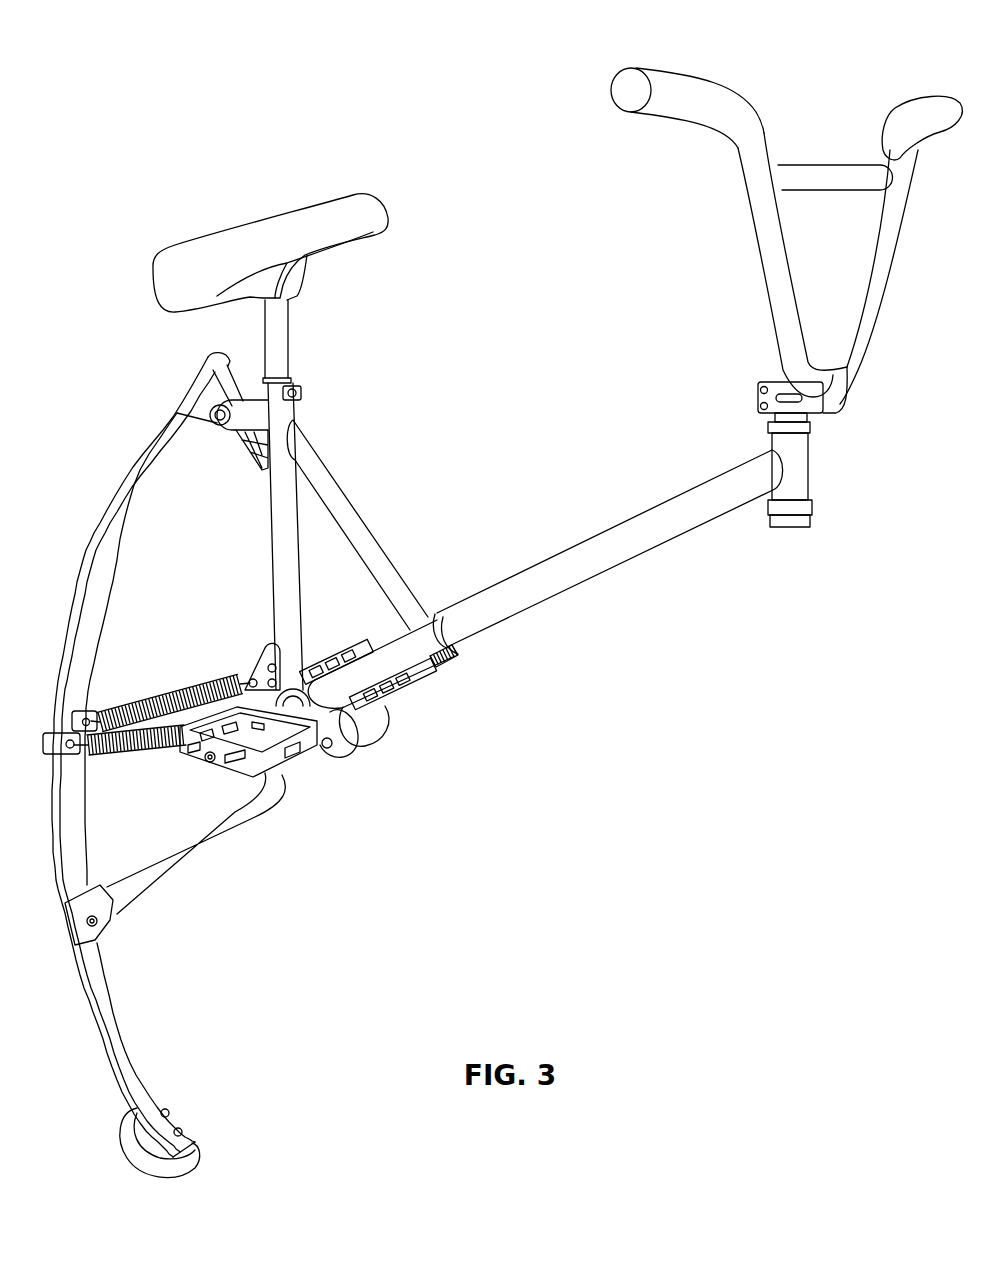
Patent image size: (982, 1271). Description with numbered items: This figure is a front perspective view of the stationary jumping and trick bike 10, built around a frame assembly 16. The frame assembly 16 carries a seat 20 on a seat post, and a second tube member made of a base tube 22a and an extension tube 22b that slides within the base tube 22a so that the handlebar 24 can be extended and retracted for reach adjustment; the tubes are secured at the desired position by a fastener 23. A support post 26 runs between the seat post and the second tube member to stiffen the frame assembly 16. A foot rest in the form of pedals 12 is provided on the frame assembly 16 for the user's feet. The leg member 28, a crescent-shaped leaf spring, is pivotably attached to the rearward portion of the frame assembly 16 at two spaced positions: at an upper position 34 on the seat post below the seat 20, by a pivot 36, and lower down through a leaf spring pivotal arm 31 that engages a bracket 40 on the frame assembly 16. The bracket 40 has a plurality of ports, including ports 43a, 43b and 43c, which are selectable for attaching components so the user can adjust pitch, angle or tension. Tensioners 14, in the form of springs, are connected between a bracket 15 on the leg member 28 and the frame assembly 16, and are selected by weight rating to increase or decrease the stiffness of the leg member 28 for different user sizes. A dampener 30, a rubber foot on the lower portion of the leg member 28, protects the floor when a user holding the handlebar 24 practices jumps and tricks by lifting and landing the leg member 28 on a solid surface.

The stationary jumping and trick bike 10 is at (407, 84).
The pedals 12 is at (377, 707).
The tensioners 14 is at (183, 707).
The bracket 15 is at (68, 757).
The frame assembly 16 is at (449, 601).
The seat 20 is at (293, 213).
The base tube 22a is at (387, 632).
The extension tube 22b is at (633, 560).
The fastener 23 is at (443, 665).
The handlebar 24 is at (852, 165).
The support post 26 is at (367, 527).
The leg member 28 is at (73, 575).
The dampener 30 is at (150, 1163).
The leaf spring pivotal arm 31 is at (200, 867).
The upper position 34 is at (253, 398).
The pivot 36 is at (217, 415).
The bracket 40 is at (307, 775).
The port 43a is at (250, 680).
The port 43b is at (270, 661).
The port 43c is at (288, 672).